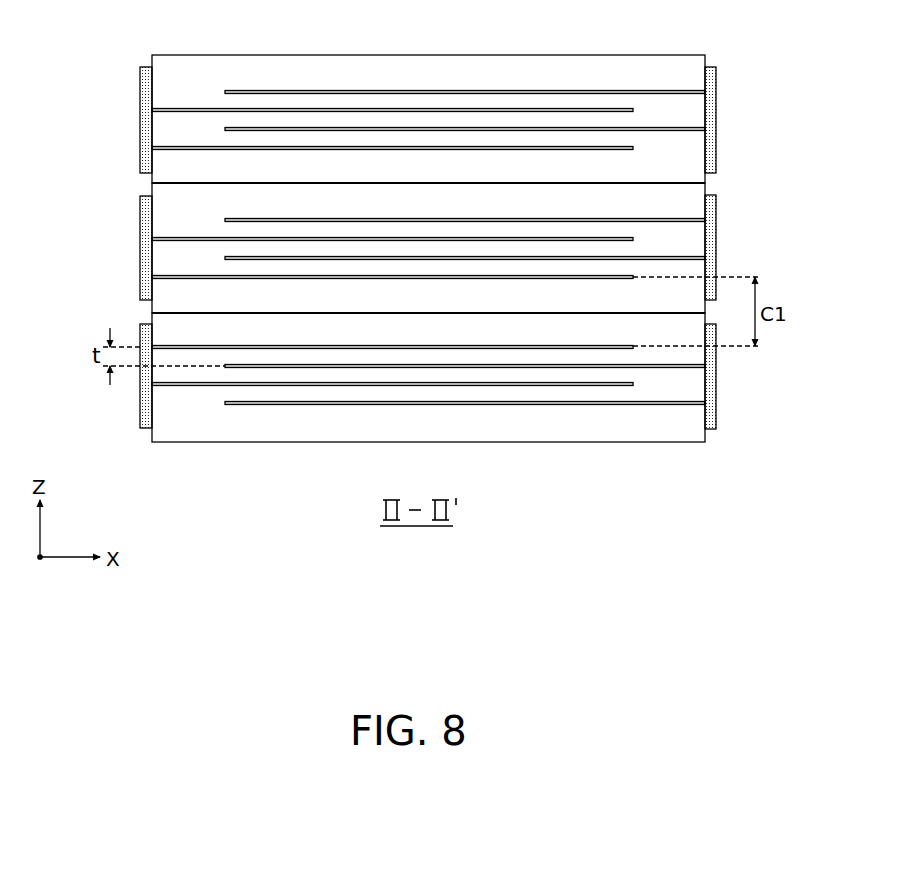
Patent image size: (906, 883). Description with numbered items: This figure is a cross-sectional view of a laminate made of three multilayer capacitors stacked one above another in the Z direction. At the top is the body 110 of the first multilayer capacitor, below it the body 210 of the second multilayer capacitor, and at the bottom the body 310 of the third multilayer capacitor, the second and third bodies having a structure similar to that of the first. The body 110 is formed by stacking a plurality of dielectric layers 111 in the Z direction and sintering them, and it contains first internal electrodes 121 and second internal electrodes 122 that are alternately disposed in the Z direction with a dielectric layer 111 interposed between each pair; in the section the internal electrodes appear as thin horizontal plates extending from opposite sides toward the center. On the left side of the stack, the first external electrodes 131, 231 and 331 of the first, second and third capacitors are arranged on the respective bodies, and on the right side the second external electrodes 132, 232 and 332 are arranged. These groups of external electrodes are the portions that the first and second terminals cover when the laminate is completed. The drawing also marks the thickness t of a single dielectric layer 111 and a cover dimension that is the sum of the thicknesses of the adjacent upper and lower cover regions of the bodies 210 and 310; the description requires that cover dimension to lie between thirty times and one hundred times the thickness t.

The body 110 is at (692, 148).
The dielectric layer 111 is at (192, 358).
The first internal electrode 121 is at (353, 110).
The second internal electrode 122 is at (460, 92).
The first external electrode 131 is at (140, 113).
The second external electrode 132 is at (716, 113).
The body 210 is at (692, 204).
The first external electrode 231 is at (140, 242).
The second external electrode 232 is at (716, 254).
The body 310 is at (692, 418).
The first external electrode 331 is at (140, 407).
The second external electrode 332 is at (716, 368).